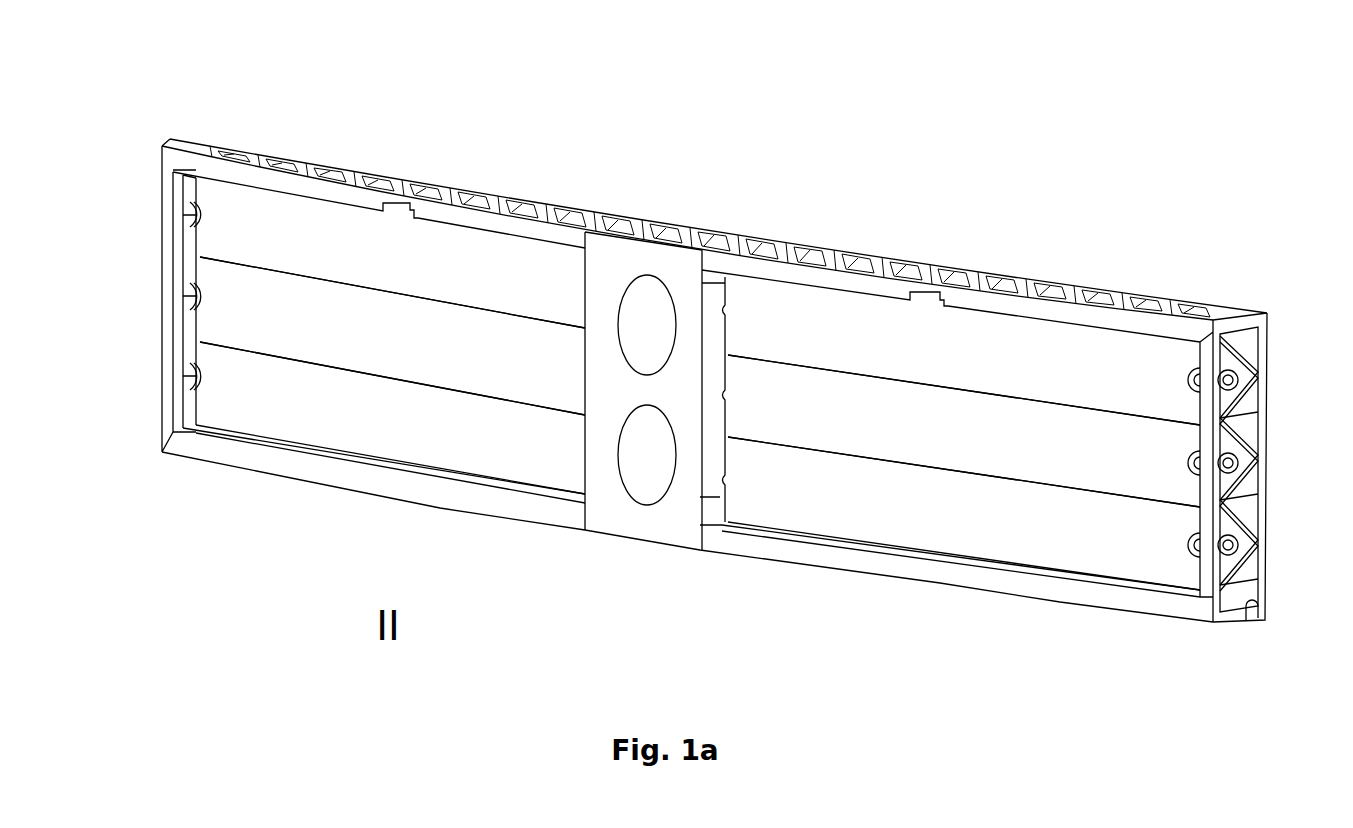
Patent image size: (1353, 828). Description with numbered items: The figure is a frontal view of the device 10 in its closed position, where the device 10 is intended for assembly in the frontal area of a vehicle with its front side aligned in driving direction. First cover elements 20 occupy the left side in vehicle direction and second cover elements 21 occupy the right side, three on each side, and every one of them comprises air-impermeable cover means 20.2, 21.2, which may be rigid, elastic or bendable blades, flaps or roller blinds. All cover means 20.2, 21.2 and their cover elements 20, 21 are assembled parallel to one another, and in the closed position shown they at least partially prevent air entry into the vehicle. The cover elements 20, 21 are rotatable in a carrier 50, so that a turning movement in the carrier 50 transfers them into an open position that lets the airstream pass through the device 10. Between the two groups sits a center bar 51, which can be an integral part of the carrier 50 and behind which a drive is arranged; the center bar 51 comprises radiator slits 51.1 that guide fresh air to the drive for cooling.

The device 10 is at (880, 232).
The first cover elements 20 is at (1097, 547).
The cover means 20.2 is at (964, 429).
The second cover elements 21 is at (478, 448).
The cover means 21.2 is at (392, 326).
The carrier 50 is at (172, 184).
The center bar 51 is at (644, 337).
The radiator slit 51.1 is at (660, 283).